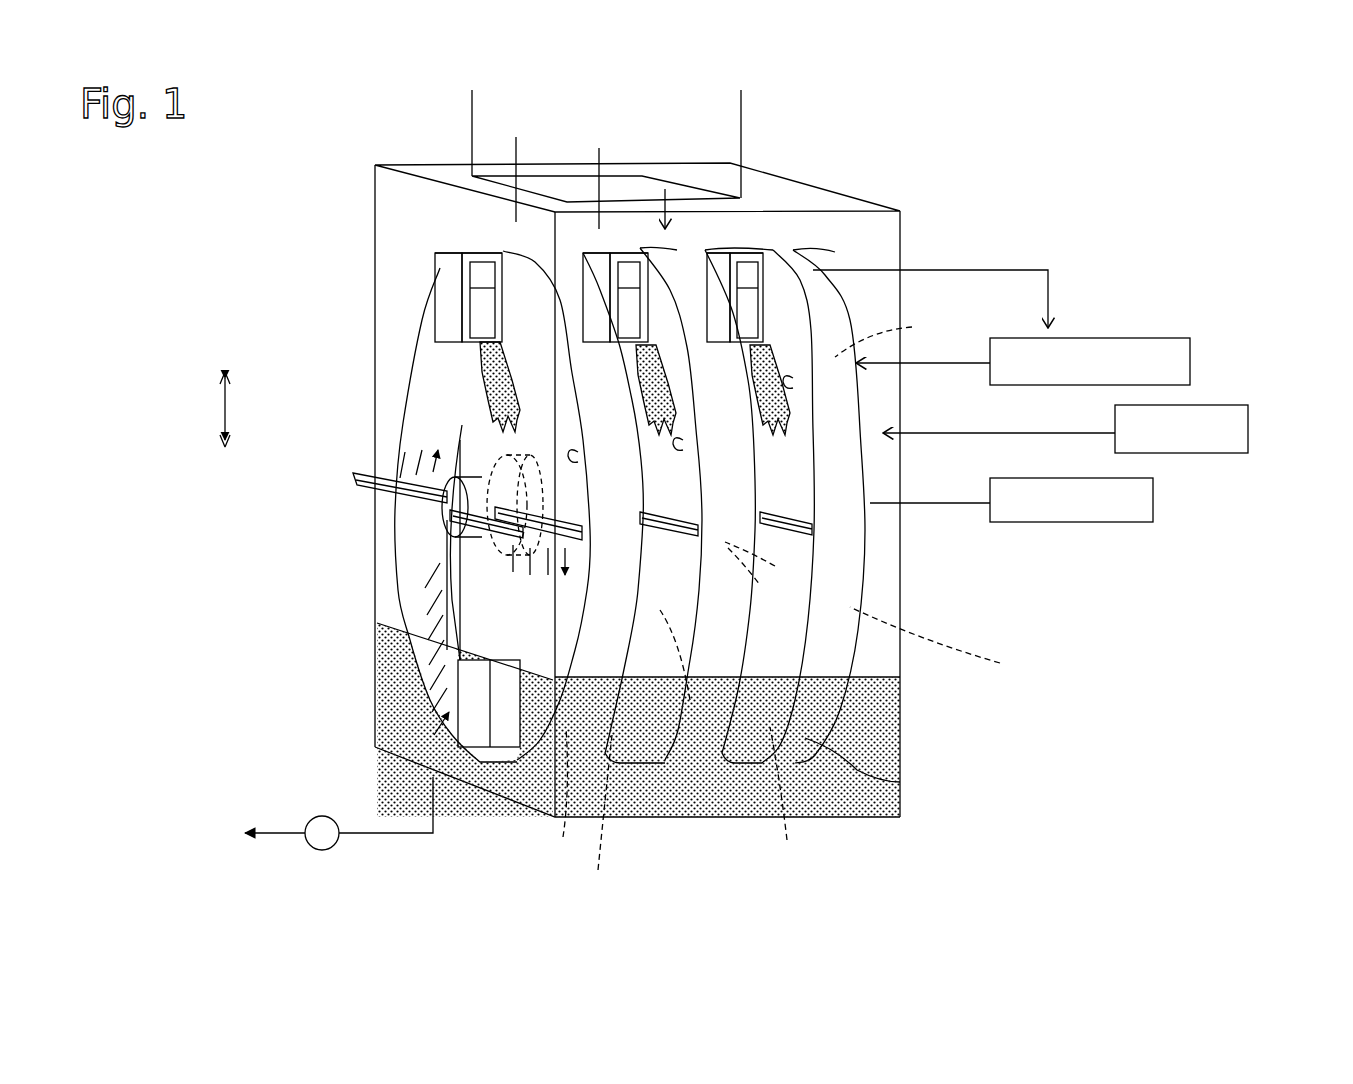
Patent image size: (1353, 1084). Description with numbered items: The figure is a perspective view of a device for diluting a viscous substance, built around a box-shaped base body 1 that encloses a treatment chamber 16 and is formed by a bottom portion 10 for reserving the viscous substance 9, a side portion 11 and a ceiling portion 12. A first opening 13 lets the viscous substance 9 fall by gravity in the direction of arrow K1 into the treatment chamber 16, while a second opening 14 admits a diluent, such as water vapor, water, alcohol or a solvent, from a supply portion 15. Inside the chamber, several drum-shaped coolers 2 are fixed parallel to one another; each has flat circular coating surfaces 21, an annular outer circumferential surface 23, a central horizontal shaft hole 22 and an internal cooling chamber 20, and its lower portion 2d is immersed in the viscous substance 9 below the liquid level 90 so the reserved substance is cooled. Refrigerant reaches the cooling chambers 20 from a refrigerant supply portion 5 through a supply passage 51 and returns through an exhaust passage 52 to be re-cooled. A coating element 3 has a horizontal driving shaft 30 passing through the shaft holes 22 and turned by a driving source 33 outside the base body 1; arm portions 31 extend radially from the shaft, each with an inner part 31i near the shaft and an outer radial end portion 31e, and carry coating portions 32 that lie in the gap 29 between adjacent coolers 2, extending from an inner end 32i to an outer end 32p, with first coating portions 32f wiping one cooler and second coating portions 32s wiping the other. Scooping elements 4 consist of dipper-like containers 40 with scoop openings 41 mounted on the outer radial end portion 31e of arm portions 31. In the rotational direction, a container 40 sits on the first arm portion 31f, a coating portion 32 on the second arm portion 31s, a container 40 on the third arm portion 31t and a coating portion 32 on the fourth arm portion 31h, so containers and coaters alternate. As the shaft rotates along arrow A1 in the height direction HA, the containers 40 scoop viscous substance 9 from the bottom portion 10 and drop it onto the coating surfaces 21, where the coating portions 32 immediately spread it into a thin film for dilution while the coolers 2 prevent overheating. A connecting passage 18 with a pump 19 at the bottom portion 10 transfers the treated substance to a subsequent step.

The base body 1 is at (905, 556).
The cooler 2 is at (575, 410).
The lower portion 2d is at (532, 767).
The coating element 3 is at (443, 427).
The scooping element 4 is at (437, 285).
The refrigerant supply portion 5 is at (1190, 357).
The viscous substance 9 is at (508, 395).
The bottom portion 10 is at (420, 770).
The side portion 11 is at (385, 672).
The ceiling portion 12 is at (775, 190).
The first opening 13 is at (635, 178).
The second opening 14 is at (925, 437).
The supply portion 15 is at (1248, 433).
The treatment chamber 16 is at (870, 243).
The connecting passage 18 is at (385, 838).
The pump 19 is at (320, 852).
The cooling chamber 20 is at (788, 605).
The coating surface 21 is at (580, 454).
The shaft hole 22 is at (520, 452).
The outer circumferential surface 23 is at (520, 262).
The gap 29 is at (670, 463).
The driving shaft 30 is at (450, 527).
The arm portion 31 is at (430, 387).
The outer radial end portion 31e is at (450, 370).
The first arm portion 31f is at (430, 407).
The fourth arm portion 31h is at (390, 477).
The slit inner portion 31i is at (482, 505).
The second arm portion 31s is at (403, 567).
The third arm portion 31t is at (463, 587).
The coating portion 32 is at (423, 423).
The first coating portion 32f is at (750, 530).
The inner end 32i is at (430, 520).
The outer end 32p is at (400, 505).
The second coating portion 32s is at (832, 500).
The driving source 33 is at (1153, 505).
The container 40 is at (455, 278).
The scoop opening 41 is at (485, 318).
The supply passage 51 is at (925, 342).
The exhaust passage 52 is at (1052, 283).
The liquid level 90 is at (840, 665).
The scooping direction A1 is at (430, 450).
The height direction HA is at (222, 408).
The supply direction K1 is at (598, 150).